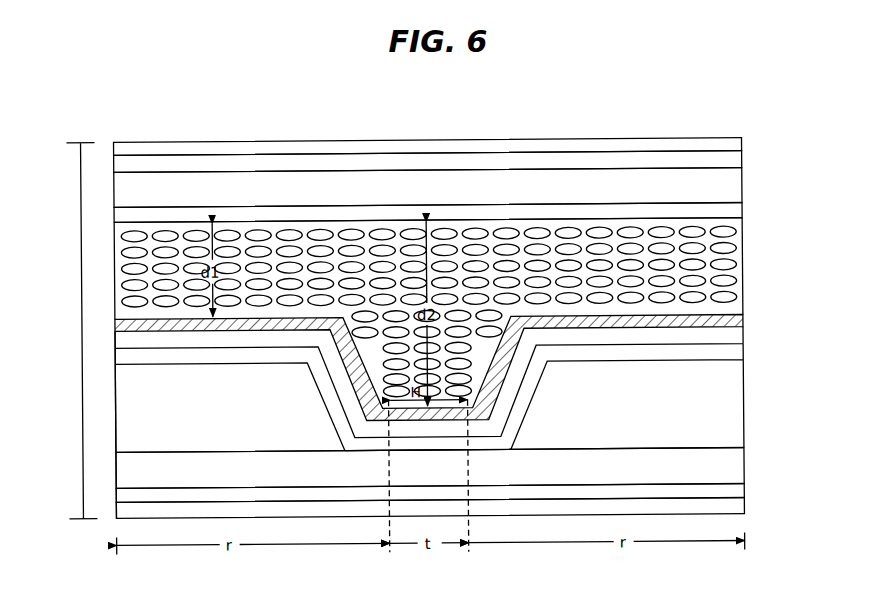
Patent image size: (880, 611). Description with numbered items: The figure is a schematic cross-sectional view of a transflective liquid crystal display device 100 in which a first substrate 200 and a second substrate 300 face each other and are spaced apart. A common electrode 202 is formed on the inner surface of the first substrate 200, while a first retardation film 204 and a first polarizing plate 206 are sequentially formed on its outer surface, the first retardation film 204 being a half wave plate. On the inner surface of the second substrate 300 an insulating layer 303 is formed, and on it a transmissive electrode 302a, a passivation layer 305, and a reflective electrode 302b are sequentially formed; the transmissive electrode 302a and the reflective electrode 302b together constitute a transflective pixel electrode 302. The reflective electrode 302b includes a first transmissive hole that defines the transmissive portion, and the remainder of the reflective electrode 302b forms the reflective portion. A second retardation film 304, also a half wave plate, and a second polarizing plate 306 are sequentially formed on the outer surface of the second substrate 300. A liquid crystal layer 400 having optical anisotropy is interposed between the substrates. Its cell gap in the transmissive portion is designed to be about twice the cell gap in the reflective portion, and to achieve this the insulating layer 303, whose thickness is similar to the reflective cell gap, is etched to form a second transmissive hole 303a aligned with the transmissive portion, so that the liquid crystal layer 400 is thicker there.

The transflective liquid crystal display device 100 is at (87, 331).
The first substrate 200 is at (736, 190).
The common electrode 202 is at (736, 214).
The first retardation film 204 is at (736, 164).
The first polarizing plate 206 is at (736, 150).
The second substrate 300 is at (736, 468).
The transflective pixel electrode 302 is at (826, 322).
The transmissive electrode 302a is at (736, 354).
The reflective electrode 302b is at (736, 324).
The insulating layer 303 is at (736, 425).
The second transmissive hole 303a is at (473, 340).
The second retardation film 304 is at (736, 490).
The passivation layer 305 is at (118, 334).
The second polarizing plate 306 is at (736, 510).
The liquid crystal layer 400 is at (736, 263).